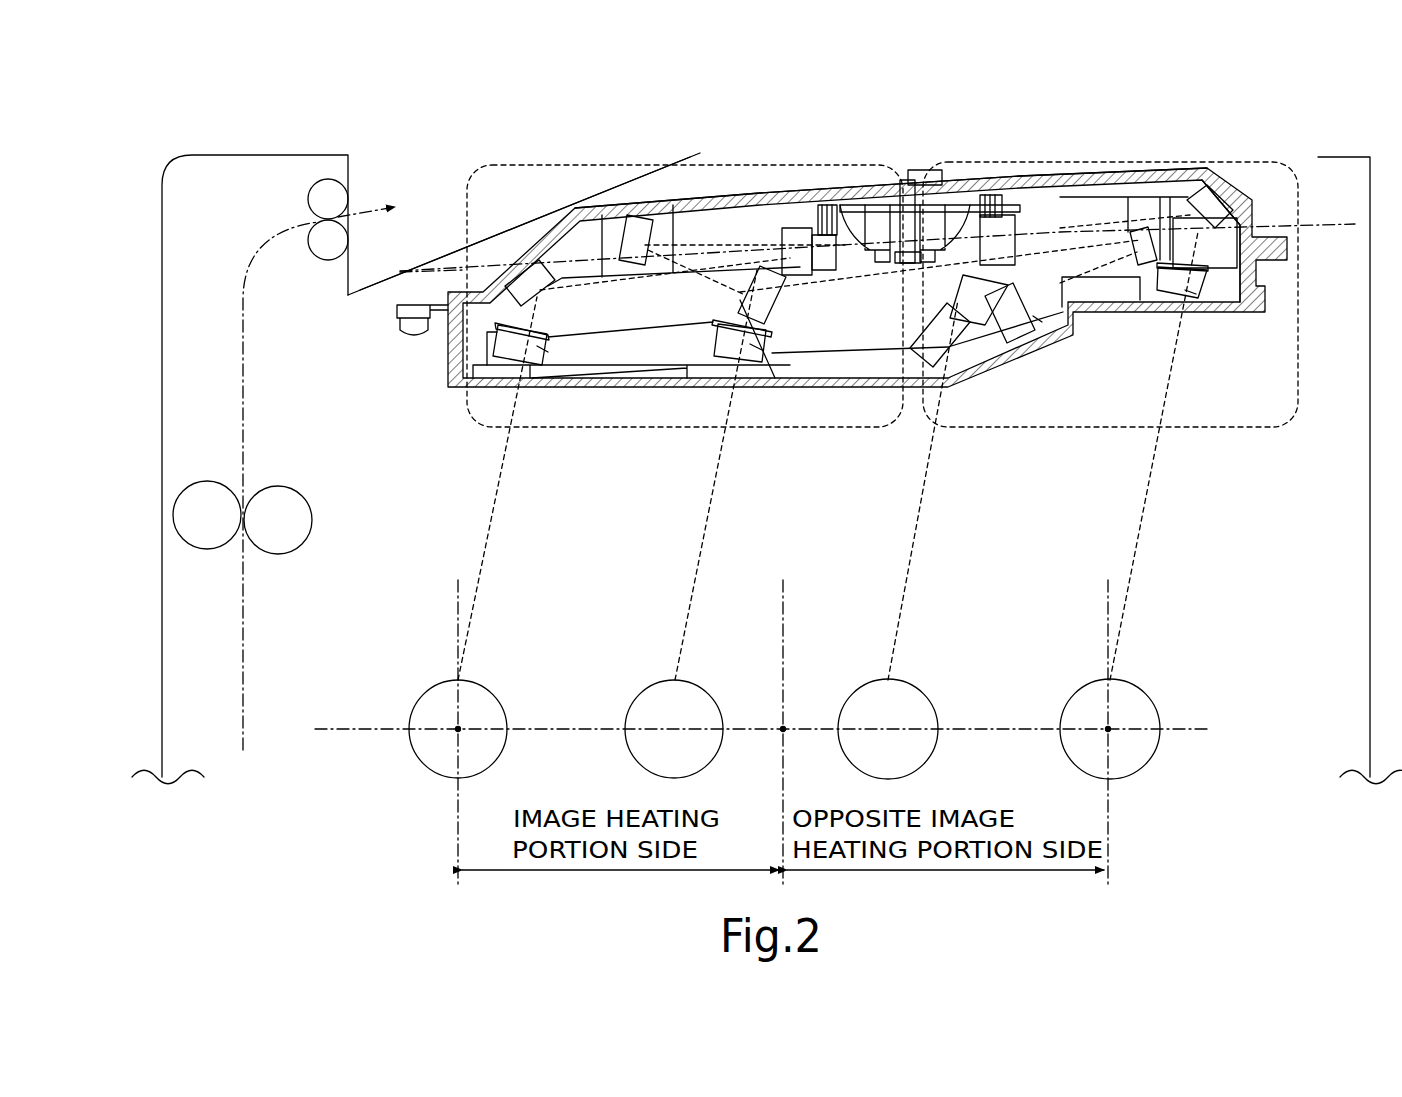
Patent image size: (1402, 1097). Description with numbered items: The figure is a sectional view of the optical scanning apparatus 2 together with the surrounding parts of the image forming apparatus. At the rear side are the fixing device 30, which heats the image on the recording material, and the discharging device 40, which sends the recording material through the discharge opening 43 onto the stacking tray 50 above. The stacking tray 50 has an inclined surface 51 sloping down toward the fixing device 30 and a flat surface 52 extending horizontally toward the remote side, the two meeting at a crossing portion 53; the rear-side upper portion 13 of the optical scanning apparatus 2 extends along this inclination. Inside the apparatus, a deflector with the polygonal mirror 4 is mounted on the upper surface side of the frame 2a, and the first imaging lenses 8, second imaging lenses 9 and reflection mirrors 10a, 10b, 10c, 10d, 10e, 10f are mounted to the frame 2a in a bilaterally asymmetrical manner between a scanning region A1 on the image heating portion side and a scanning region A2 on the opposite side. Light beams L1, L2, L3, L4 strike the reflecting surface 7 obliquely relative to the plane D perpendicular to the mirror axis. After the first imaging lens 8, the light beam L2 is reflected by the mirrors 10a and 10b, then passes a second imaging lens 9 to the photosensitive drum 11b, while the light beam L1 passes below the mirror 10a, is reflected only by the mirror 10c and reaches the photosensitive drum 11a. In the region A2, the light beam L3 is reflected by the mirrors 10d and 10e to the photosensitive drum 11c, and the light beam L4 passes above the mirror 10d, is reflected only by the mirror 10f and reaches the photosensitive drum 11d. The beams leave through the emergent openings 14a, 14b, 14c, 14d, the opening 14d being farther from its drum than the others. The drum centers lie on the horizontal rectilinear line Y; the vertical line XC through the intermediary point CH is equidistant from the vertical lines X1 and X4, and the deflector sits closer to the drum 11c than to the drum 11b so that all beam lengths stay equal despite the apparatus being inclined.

The optical scanning apparatus 2 is at (742, 194).
The frame 2a is at (1196, 175).
The polygonal mirror 4 is at (900, 190).
The reflecting surface 7 is at (858, 205).
The first imaging lens 8 is at (798, 228).
The second imaging lens 9 is at (548, 352).
The first reflection mirror 10a is at (644, 222).
The second reflection mirror 10b is at (775, 380).
The third reflection mirror 10c is at (515, 280).
The fourth reflection mirror 10d is at (1140, 270).
The fifth reflection mirror 10e is at (940, 345).
The sixth reflection mirror 10f is at (1226, 205).
The photosensitive drum 11a is at (432, 686).
The photosensitive drum 11b is at (648, 686).
The photosensitive drum 11c is at (862, 688).
The photosensitive drum 11d is at (1082, 690).
The rear-side upper portion 13 is at (600, 214).
The emergent opening 14a is at (512, 362).
The emergent opening 14b is at (730, 362).
The emergent opening 14c is at (950, 390).
The emergent opening 14d is at (1170, 300).
The fixing device 30 is at (264, 476).
The discharging device 40 is at (296, 201).
The discharge opening 43 is at (350, 212).
The stacking tray 50 is at (1322, 157).
The inclined surface 51 is at (606, 206).
The flat surface 52 is at (1047, 162).
The crossing portion 53 is at (698, 153).
The scanning region A1 is at (516, 165).
The scanning region A2 is at (1077, 162).
The plane D is at (446, 270).
The light beam L1 is at (490, 515).
The light beam L2 is at (706, 518).
The light beam L3 is at (915, 538).
The light beam L4 is at (1140, 518).
The vertical line X1 is at (457, 600).
The vertical line XC is at (783, 600).
The vertical line X4 is at (1108, 600).
The rectilinear line Y is at (1212, 726).
The intermediary point CH is at (775, 735).